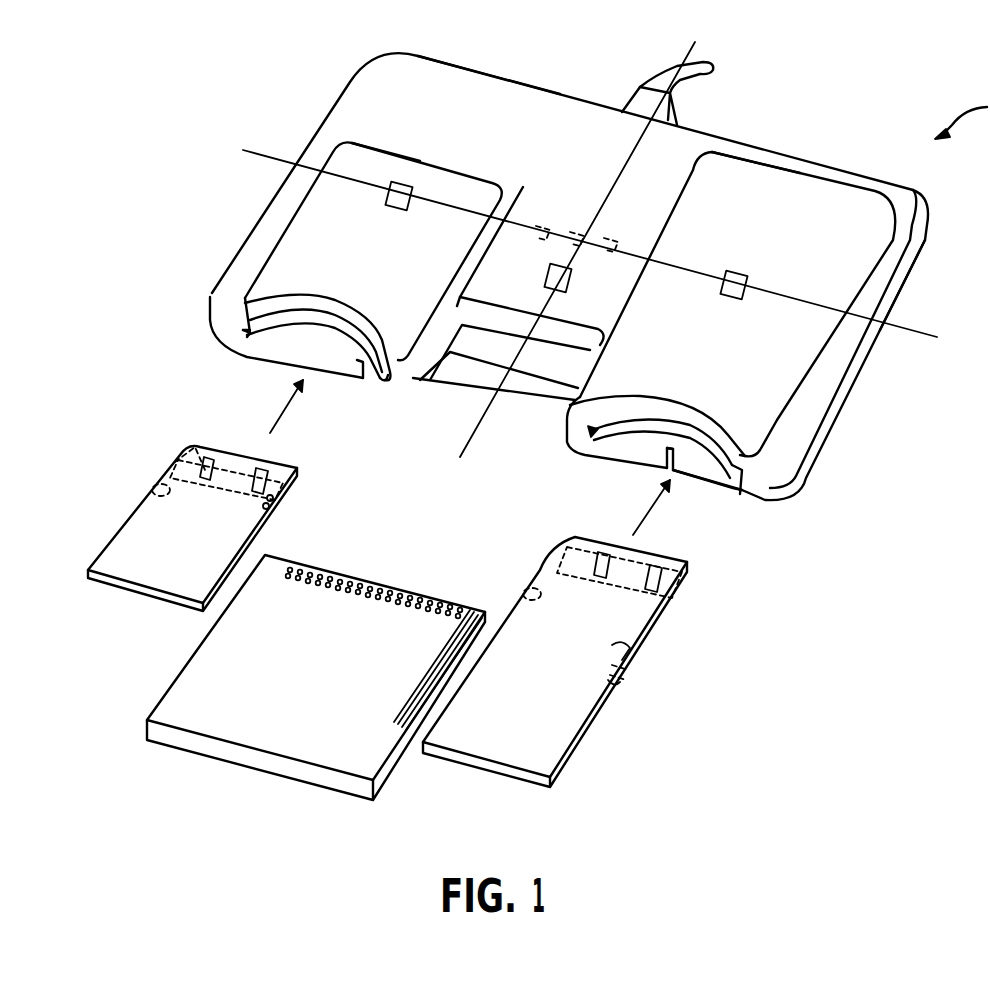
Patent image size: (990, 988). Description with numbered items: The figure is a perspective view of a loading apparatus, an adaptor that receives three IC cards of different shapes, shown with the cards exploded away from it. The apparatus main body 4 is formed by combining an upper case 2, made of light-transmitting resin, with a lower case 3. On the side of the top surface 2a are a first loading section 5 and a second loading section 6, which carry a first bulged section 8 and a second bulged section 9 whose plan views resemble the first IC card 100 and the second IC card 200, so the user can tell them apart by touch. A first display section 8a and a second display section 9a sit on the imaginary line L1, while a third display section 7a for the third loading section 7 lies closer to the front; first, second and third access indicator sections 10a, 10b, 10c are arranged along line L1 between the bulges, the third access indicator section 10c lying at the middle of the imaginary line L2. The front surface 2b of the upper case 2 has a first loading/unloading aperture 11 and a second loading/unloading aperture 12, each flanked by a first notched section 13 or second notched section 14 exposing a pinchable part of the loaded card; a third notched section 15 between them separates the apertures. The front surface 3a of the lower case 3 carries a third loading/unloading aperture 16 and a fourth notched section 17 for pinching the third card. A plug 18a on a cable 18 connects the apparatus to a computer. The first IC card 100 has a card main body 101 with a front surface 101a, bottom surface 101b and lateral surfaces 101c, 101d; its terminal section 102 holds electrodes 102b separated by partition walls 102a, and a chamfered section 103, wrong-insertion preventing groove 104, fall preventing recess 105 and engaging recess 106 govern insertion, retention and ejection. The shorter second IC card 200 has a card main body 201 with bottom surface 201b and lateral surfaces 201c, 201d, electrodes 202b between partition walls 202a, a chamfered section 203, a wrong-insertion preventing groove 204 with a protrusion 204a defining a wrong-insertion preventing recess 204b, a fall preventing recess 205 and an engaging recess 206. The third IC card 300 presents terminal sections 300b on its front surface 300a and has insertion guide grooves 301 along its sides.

The upper case 2 is at (688, 140).
The top surface 2a is at (501, 80).
The front surface 2b is at (213, 323).
The lower case 3 is at (700, 460).
The front surface 3a is at (550, 383).
The apparatus main body 4 is at (903, 283).
The first loading section 5 is at (840, 203).
The second loading section 6 is at (307, 210).
The third loading section 7 is at (450, 360).
The third display section 7a is at (573, 283).
The first bulged section 8 is at (782, 183).
The first display section 8a is at (737, 270).
The second bulged section 9 is at (380, 167).
The second display section 9a is at (403, 183).
The first access indicator section 10a is at (610, 243).
The second access indicator section 10b is at (543, 230).
The third access indicator section 10c is at (577, 237).
The first loading/unloading aperture 11 is at (627, 423).
The second loading/unloading aperture 12 is at (247, 330).
The first notched section 13 is at (680, 410).
The second notched section 14 is at (340, 313).
The third notched section 15 is at (510, 322).
The third loading/unloading aperture 16 is at (480, 353).
The fourth notched section 17 is at (517, 373).
The cable 18 is at (712, 71).
The plug 18a is at (640, 107).
The imaginary line L1 is at (603, 252).
The imaginary line L2 is at (672, 62).
The first IC card 100 is at (803, 653).
The card main body 101 is at (570, 707).
The front surface 101a is at (655, 548).
The bottom surface 101b is at (655, 625).
The lateral surface 101c is at (427, 747).
The lateral surface 101d is at (587, 737).
The terminal section 102 is at (655, 537).
The partition walls 102a is at (597, 537).
The electrodes 102b is at (607, 550).
The chamfered section 103 is at (570, 527).
The wrong-insertion preventing groove 104 is at (553, 560).
The fall preventing recess 105 is at (527, 593).
The engaging recess 106 is at (633, 647).
The second IC card 200 is at (283, 448).
The card main body 201 is at (183, 550).
The bottom surface 201b is at (263, 517).
The lateral surface 201c is at (130, 513).
The lateral surface 201d is at (297, 480).
The partition walls 202a is at (230, 463).
The electrodes 202b is at (207, 453).
The chamfered section 203 is at (177, 453).
The wrong-insertion preventing groove 204 is at (190, 450).
The protrusion 204a is at (183, 467).
The wrong-insertion preventing recess 204b is at (163, 468).
The fall preventing recess 205 is at (163, 487).
The engaging recess 206 is at (280, 507).
The third IC card 300 is at (208, 768).
The front surface 300a is at (453, 597).
The terminal sections 300b is at (433, 597).
The insertion guide grooves 301 is at (463, 660).